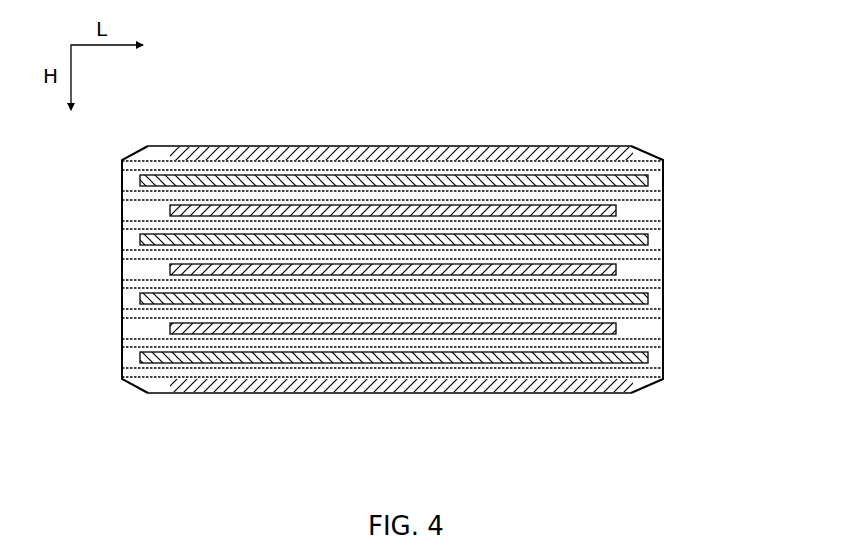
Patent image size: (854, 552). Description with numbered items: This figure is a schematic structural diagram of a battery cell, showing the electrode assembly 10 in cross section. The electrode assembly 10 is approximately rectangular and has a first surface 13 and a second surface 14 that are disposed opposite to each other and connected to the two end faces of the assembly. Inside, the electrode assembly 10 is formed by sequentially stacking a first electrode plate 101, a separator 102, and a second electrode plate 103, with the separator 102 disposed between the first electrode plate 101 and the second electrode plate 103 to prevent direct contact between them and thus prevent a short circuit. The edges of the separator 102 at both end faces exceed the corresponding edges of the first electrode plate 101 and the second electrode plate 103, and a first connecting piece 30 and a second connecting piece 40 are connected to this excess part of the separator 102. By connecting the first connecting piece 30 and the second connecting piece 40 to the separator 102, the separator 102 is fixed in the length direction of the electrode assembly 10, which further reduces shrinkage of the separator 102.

The electrode assembly 10 is at (722, 166).
The first electrode plate 101 is at (607, 197).
The separator 102 is at (655, 208).
The second electrode plate 103 is at (657, 238).
The first surface 13 is at (383, 137).
The second surface 14 is at (363, 386).
The first connecting piece 30 is at (113, 263).
The second connecting piece 40 is at (647, 378).